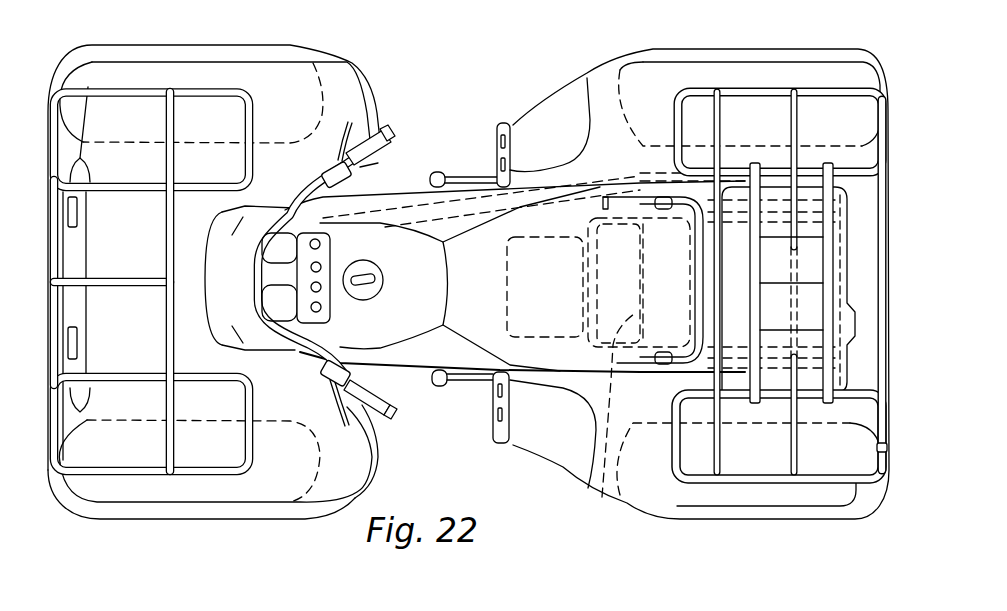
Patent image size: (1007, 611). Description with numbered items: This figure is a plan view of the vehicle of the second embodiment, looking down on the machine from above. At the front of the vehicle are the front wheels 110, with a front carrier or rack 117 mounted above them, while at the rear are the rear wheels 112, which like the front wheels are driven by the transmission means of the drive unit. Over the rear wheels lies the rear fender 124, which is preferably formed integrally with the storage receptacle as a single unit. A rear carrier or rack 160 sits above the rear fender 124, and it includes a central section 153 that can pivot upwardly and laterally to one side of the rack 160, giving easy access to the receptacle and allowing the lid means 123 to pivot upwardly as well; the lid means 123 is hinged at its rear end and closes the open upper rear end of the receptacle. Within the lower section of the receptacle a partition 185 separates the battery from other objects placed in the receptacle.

The front wheels 110 is at (228, 44).
The front carrier or rack 117 is at (46, 108).
The rear fender 124 is at (620, 66).
The lid means 123 is at (735, 257).
The rear wheels 112 is at (753, 52).
The rear carrier or rack 160 is at (870, 68).
The central section 153 is at (810, 375).
The partition 185 is at (602, 497).